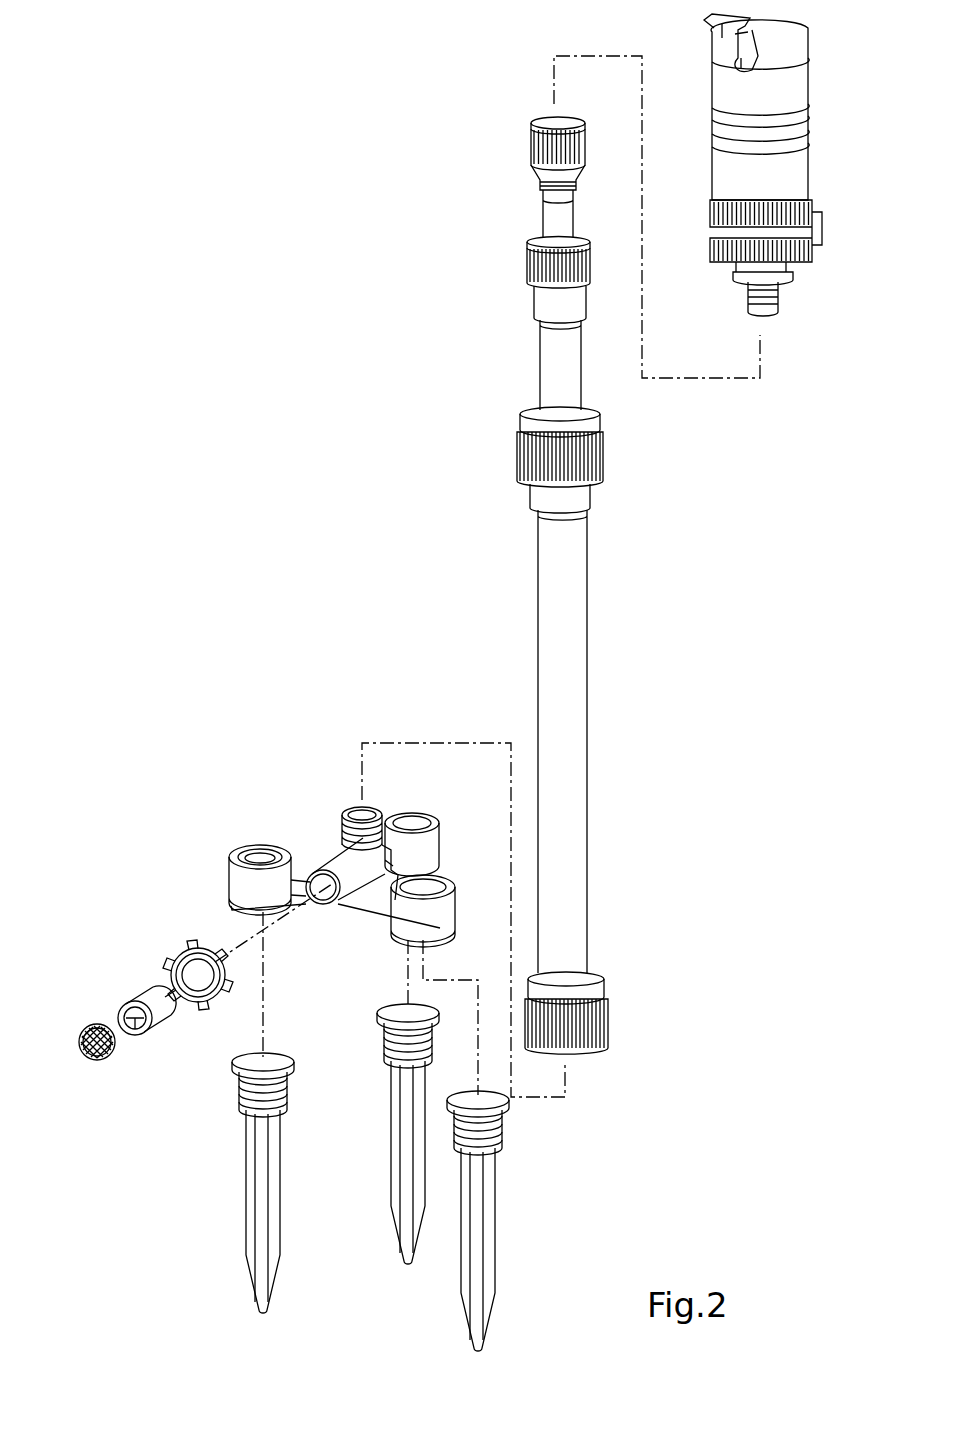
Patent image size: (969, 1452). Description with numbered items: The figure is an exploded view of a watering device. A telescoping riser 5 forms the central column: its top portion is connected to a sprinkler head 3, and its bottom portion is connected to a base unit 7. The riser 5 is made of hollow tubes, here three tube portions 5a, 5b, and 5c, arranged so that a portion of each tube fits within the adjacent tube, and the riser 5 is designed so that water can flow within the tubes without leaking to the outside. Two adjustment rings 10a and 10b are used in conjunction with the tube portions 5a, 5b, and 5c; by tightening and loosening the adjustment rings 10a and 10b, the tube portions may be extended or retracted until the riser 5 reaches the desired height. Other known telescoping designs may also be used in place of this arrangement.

The sprinkler head 3 is at (812, 134).
The riser 5 is at (493, 987).
The tube portion 5a is at (550, 221).
The tube portion 5b is at (540, 358).
The tube portion 5c is at (540, 625).
The adjustment ring 10a is at (592, 266).
The adjustment ring 10b is at (605, 447).
The base unit 7 is at (80, 797).